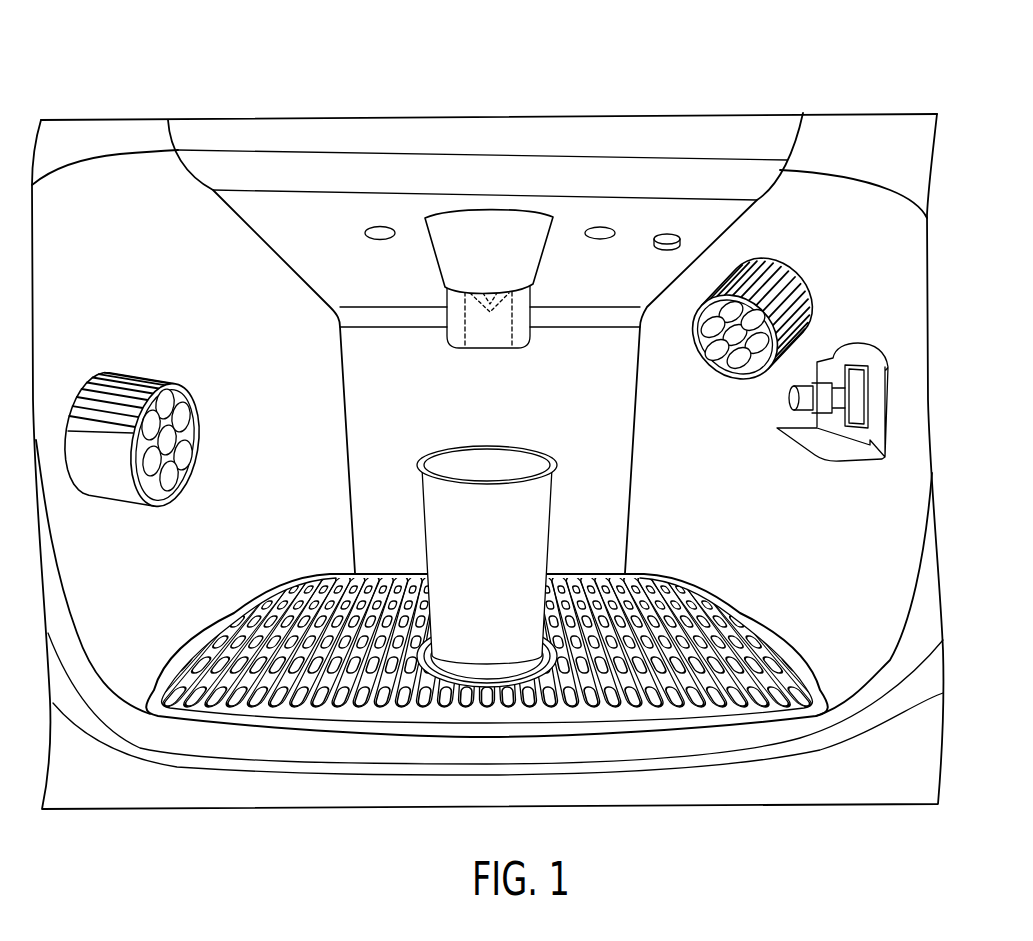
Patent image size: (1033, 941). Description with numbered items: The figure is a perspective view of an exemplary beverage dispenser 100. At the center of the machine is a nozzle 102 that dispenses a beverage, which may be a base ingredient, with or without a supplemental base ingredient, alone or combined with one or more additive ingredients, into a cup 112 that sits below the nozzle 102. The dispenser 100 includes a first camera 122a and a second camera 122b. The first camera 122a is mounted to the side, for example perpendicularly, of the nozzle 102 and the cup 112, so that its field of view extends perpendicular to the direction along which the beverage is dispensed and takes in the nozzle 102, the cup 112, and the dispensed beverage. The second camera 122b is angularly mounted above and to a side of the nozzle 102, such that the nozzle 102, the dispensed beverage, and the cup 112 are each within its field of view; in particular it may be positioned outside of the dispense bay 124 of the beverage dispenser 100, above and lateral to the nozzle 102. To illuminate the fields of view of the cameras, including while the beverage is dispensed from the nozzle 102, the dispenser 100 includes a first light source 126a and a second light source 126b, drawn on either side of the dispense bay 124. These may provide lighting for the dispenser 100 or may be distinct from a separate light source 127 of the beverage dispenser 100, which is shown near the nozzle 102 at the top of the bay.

The beverage dispenser 100 is at (574, 87).
The nozzle 102 is at (530, 260).
The cup 112 is at (455, 508).
The first camera 122a is at (793, 402).
The second camera 122b is at (656, 250).
The dispense bay 124 is at (606, 580).
The first light source 126a is at (170, 440).
The second light source 126b is at (707, 337).
The separate light source 127 is at (378, 240).